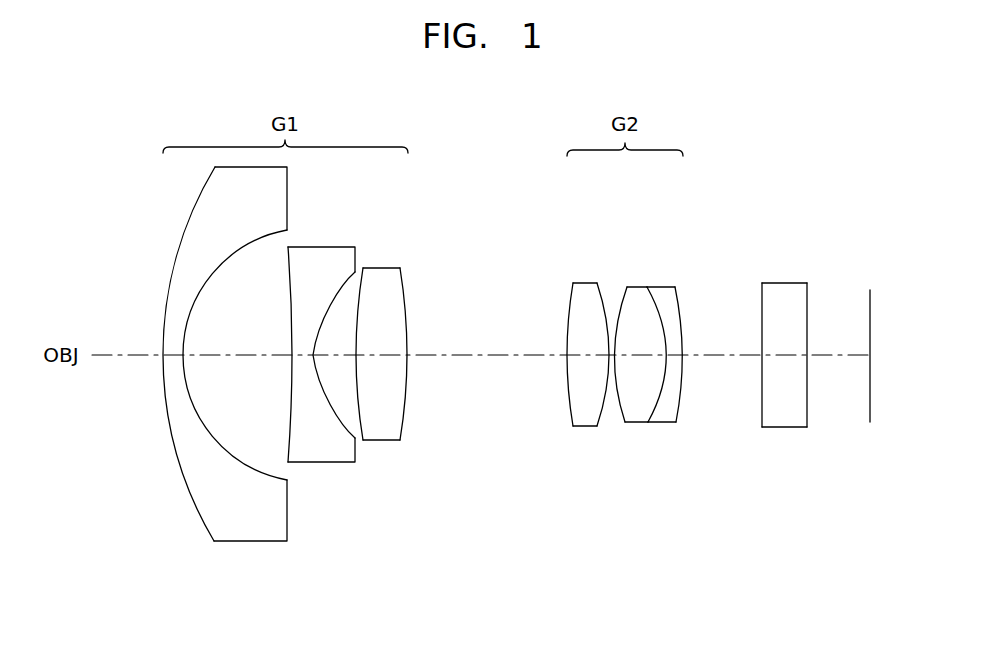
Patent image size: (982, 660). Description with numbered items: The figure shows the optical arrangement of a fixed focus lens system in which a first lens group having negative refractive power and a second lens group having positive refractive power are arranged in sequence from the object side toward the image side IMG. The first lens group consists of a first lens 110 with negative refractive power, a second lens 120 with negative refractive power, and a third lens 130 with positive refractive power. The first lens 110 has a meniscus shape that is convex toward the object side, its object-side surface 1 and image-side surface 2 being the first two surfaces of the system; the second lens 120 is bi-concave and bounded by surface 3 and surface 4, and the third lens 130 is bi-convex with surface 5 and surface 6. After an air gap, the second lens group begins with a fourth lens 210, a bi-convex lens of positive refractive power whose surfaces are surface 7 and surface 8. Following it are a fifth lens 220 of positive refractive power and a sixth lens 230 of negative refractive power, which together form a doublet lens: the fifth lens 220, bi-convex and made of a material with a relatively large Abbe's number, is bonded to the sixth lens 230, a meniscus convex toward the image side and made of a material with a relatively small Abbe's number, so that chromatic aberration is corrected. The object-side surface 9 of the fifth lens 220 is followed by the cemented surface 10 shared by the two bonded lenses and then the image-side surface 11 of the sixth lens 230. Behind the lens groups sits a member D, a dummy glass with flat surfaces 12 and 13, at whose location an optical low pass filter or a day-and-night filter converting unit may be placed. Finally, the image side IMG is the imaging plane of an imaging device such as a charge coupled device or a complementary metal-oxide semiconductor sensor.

The first lens surface 1 is at (190, 220).
The second lens surface 2 is at (206, 282).
The third lens surface 3 is at (293, 320).
The fourth lens surface 4 is at (323, 310).
The fifth lens surface 5 is at (358, 325).
The sixth lens surface 6 is at (410, 337).
The seventh lens surface 7 is at (571, 303).
The eighth lens surface 8 is at (609, 300).
The ninth lens surface 9 is at (615, 302).
The tenth lens surface 10 is at (658, 302).
The eleventh lens surface 11 is at (680, 320).
The twelfth surface 12 is at (762, 303).
The thirteenth surface 13 is at (807, 303).
The first lens 110 is at (209, 391).
The second lens 120 is at (295, 394).
The third lens 130 is at (409, 393).
The fourth lens 210 is at (580, 351).
The fifth lens 220 is at (643, 370).
The sixth lens 230 is at (683, 370).
The member D (dummy glass) D is at (785, 357).
The image side IMG is at (870, 422).